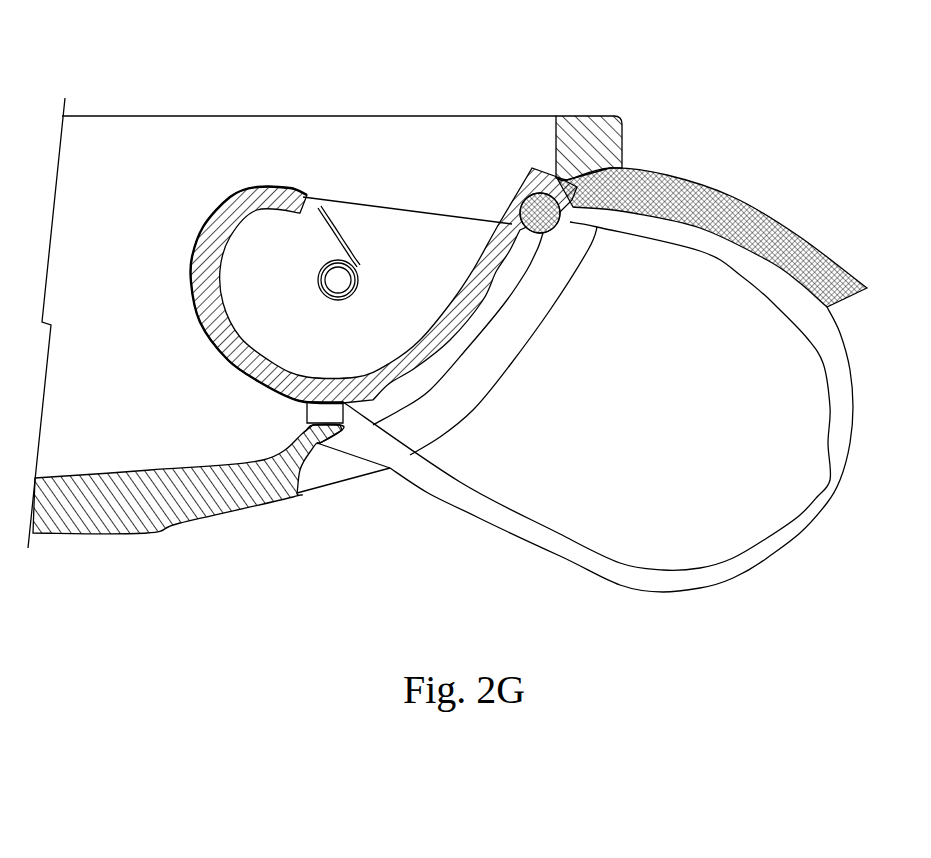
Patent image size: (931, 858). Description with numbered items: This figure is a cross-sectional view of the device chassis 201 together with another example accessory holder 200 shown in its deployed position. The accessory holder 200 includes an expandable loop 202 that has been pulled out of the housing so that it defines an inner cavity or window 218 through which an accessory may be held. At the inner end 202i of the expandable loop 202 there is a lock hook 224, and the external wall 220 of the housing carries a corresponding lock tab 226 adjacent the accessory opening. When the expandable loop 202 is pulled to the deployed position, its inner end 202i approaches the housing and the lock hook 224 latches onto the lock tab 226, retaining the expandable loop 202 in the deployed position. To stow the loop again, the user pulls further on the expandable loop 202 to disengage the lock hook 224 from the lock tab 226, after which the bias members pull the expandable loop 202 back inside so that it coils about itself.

The device chassis 201 is at (148, 78).
The accessory holder 200 is at (197, 375).
The expandable loop 202 is at (840, 438).
The inner end of the expandable loop 202i is at (405, 432).
The inner cavity or window 218 is at (672, 397).
The lock hook 224 is at (340, 410).
The lock tab 226 is at (320, 445).
The external wall 220 is at (165, 502).